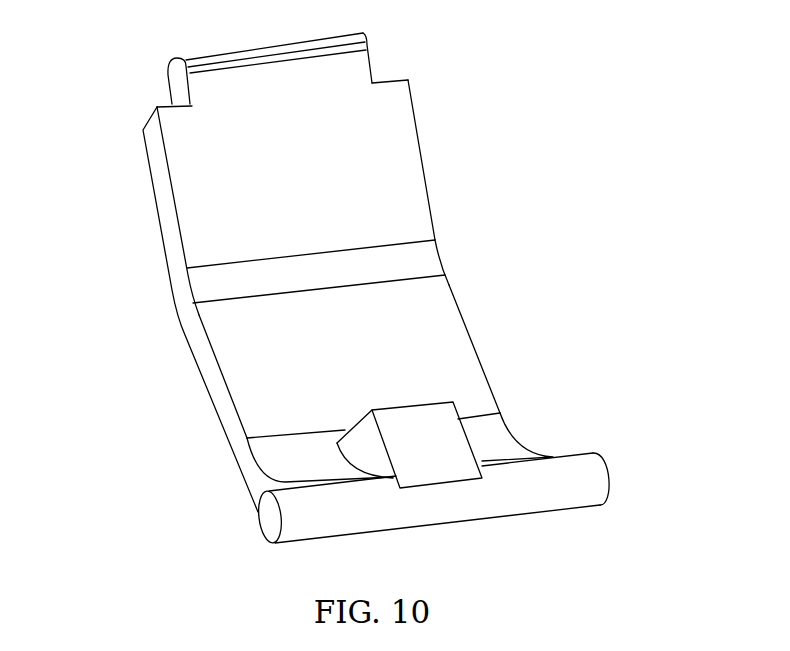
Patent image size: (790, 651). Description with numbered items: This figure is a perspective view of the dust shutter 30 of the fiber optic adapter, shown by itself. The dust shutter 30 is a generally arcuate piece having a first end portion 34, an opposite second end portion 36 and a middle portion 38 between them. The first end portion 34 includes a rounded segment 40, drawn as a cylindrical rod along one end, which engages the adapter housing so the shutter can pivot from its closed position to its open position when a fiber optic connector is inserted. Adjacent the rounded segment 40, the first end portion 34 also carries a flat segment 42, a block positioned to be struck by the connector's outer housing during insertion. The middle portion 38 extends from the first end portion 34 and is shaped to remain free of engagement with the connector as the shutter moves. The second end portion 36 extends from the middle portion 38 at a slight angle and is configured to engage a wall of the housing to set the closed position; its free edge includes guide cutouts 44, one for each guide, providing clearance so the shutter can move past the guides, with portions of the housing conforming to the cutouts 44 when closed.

The dust shutter 30 is at (518, 171).
The first end portion 34 is at (616, 438).
The second end portion 36 is at (115, 183).
The middle portion 38 is at (489, 325).
The rounded segment 40 is at (537, 493).
The flat segment 42 is at (435, 459).
The guide cutouts 44 is at (163, 88).